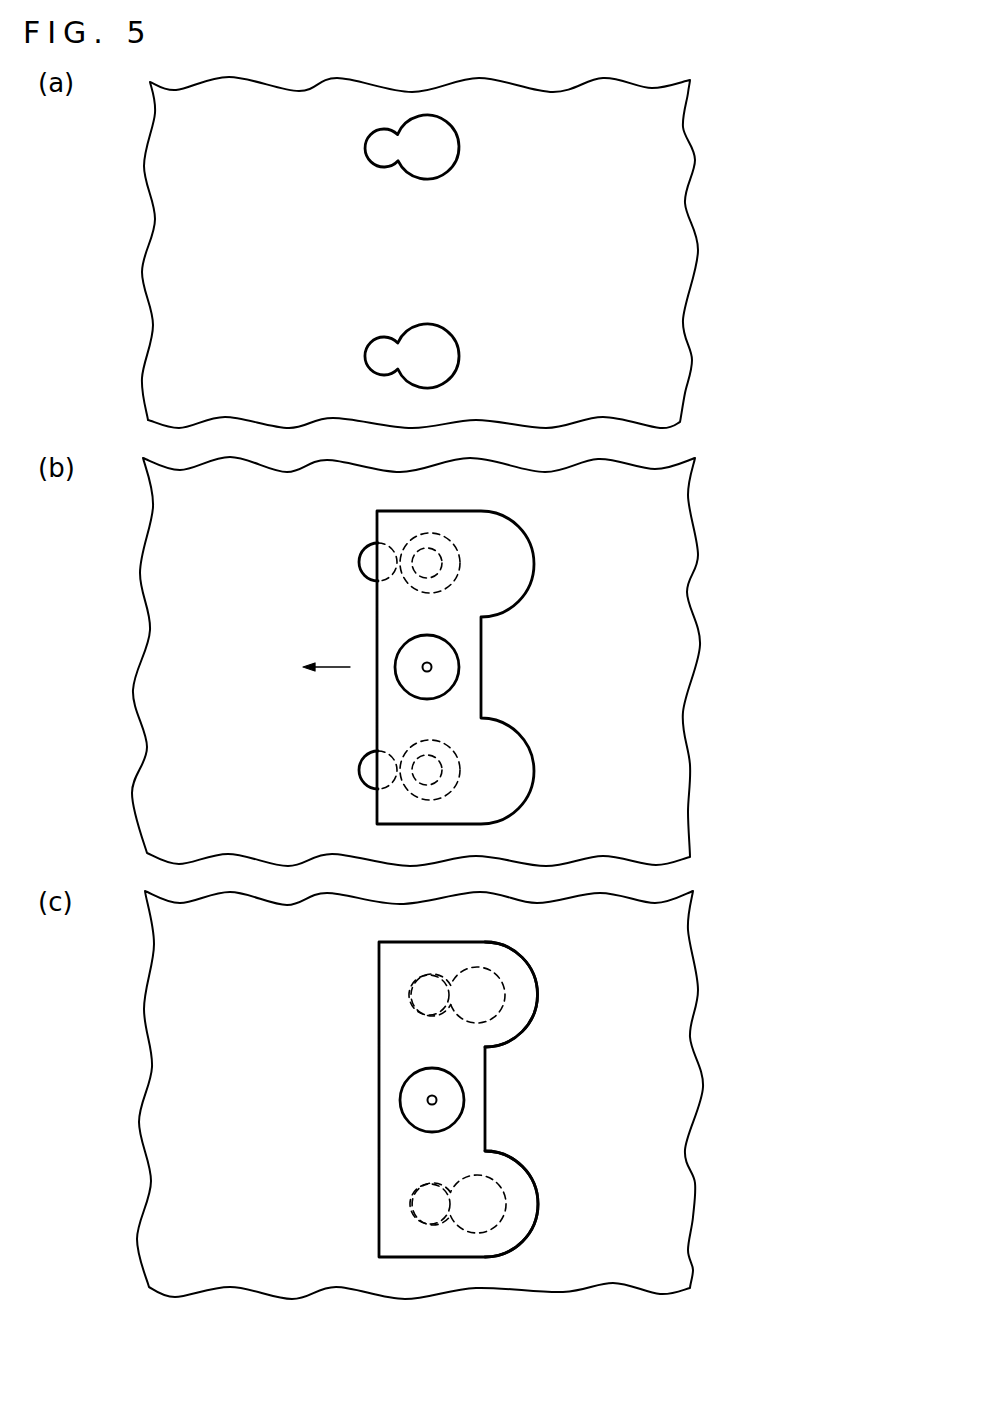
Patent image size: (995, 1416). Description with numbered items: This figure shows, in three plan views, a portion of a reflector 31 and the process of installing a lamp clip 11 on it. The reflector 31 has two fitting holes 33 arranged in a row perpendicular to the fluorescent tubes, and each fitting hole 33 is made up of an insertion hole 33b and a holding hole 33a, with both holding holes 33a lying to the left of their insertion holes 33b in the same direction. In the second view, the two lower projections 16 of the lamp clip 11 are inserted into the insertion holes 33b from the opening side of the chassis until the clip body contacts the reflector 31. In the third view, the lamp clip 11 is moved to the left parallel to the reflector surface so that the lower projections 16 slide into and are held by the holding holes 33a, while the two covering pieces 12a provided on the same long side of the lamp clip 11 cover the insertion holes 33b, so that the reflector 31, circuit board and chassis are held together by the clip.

The substrate 31 is at (638, 178).
The fitting hole 33 is at (397, 183).
The holding hole 33a is at (378, 149).
The insertion hole 33b is at (442, 142).
The lamp clip 11 is at (496, 672).
The lower projection 16 is at (452, 586).
The covering piece 12a is at (523, 1030).